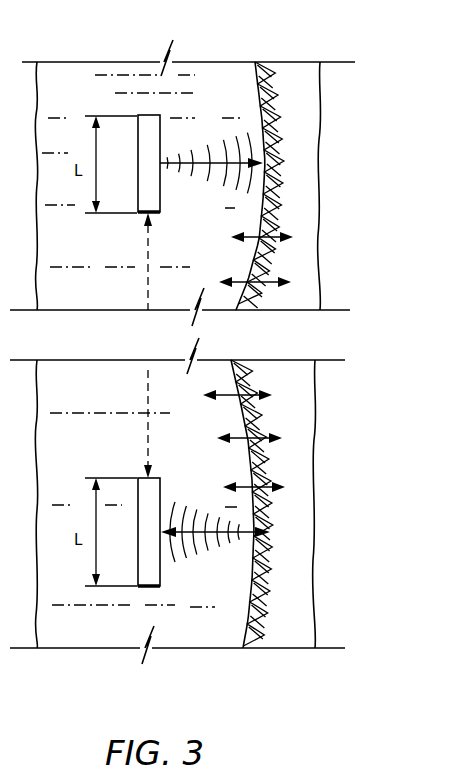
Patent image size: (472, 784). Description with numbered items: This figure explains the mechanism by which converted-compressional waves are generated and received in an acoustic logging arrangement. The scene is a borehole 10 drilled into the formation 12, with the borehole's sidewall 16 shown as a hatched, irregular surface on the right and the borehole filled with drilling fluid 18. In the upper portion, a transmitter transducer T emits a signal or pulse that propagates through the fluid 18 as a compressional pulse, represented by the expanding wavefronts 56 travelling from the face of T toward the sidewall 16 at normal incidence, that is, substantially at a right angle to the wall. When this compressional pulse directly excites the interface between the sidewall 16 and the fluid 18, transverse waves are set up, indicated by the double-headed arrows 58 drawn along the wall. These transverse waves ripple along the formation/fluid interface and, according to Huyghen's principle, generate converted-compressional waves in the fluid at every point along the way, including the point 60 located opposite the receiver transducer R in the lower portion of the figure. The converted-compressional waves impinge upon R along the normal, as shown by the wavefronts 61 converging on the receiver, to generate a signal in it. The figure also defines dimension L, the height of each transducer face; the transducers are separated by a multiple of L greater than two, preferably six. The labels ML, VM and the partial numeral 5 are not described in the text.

The borehole 10 is at (49, 50).
The partial numeral (cut off) 5 is at (3, 100).
The formation 12 is at (313, 181).
The sidewall 16 is at (250, 258).
The drilling fluid 18 is at (73, 257).
The wavefronts 56 is at (205, 122).
The double-headed arrows 58 is at (223, 398).
The point 60 is at (263, 522).
The wavefronts 61 is at (202, 497).
The measurement line ML is at (146, 402).
The wall velocity VM is at (290, 387).